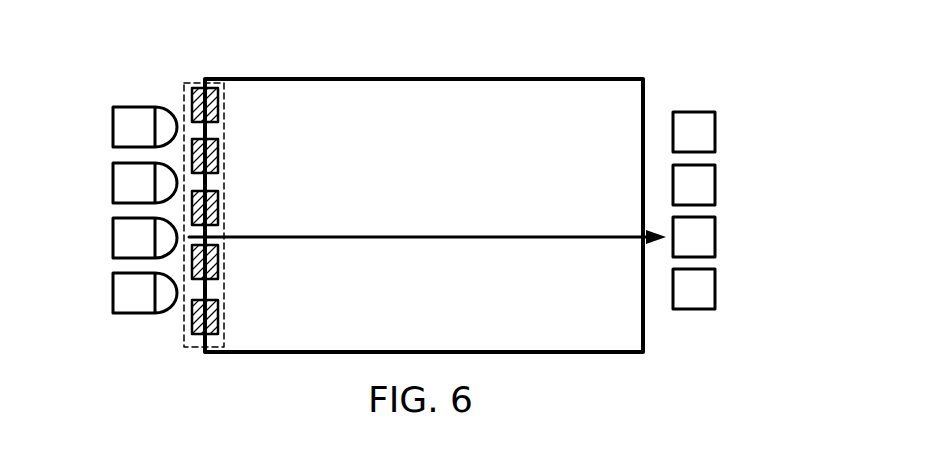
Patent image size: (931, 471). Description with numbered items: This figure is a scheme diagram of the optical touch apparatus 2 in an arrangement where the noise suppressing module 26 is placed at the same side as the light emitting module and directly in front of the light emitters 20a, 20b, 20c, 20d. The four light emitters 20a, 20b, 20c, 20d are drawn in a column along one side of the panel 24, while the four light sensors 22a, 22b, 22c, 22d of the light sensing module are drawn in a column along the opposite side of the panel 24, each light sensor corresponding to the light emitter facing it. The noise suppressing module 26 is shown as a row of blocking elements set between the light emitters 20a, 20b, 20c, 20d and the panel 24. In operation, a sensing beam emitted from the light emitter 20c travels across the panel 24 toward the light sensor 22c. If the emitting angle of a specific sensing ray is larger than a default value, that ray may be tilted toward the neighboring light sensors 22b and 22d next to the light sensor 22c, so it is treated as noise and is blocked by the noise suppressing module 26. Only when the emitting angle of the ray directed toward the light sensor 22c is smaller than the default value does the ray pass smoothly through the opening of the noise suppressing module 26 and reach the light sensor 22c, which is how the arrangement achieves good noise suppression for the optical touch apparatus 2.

The optical touch apparatus 2 is at (540, 46).
The light emitter 20a is at (113, 133).
The light emitter 20b is at (113, 188).
The light emitter 20c is at (113, 243).
The light emitter 20d is at (113, 298).
The light sensor 22a is at (716, 134).
The light sensor 22b is at (716, 187).
The light sensor 22c is at (716, 240).
The light sensor 22d is at (716, 294).
The panel 24 is at (375, 80).
The noise suppressing module 26 is at (193, 82).